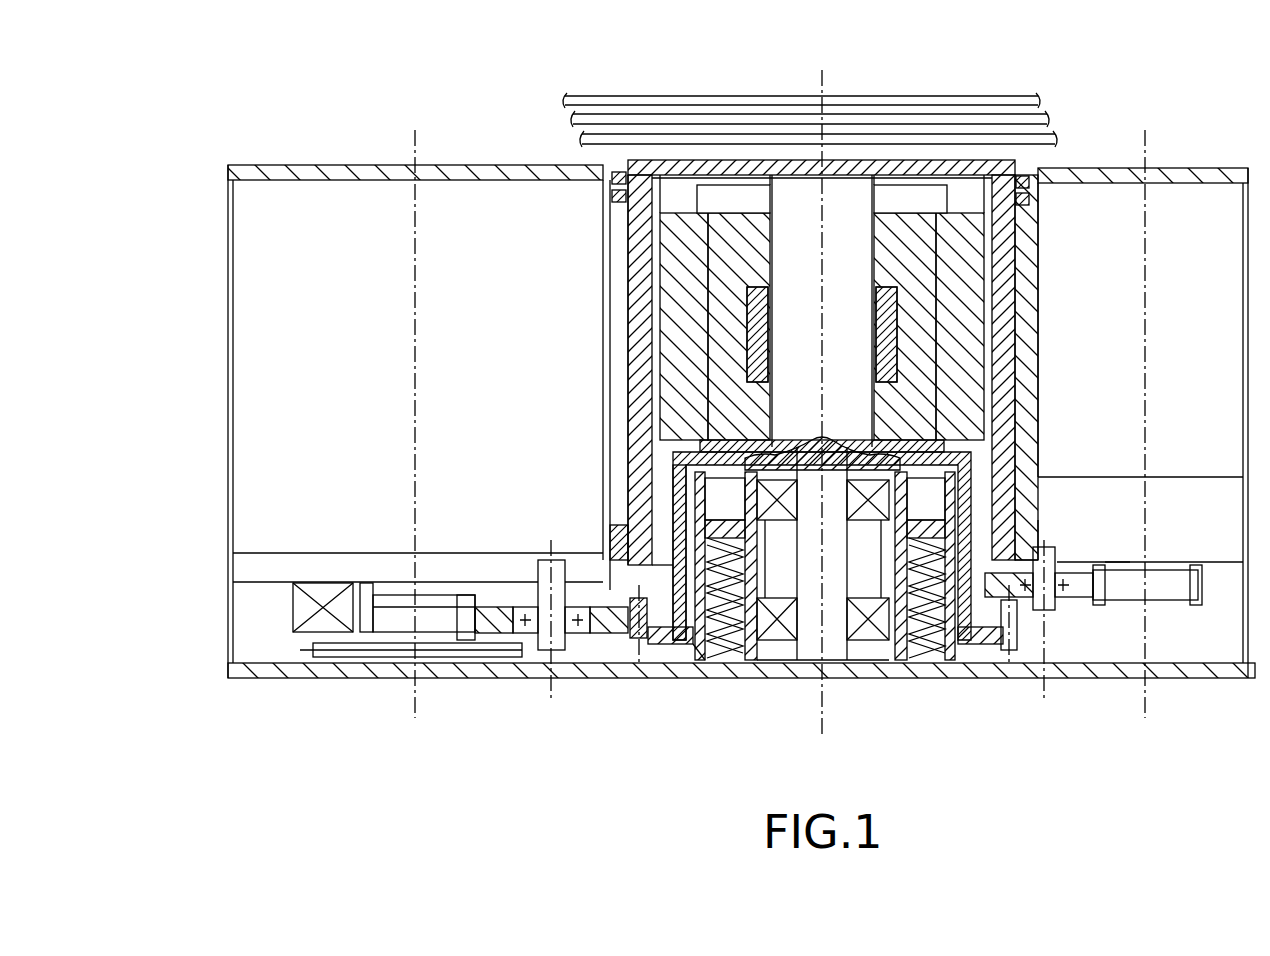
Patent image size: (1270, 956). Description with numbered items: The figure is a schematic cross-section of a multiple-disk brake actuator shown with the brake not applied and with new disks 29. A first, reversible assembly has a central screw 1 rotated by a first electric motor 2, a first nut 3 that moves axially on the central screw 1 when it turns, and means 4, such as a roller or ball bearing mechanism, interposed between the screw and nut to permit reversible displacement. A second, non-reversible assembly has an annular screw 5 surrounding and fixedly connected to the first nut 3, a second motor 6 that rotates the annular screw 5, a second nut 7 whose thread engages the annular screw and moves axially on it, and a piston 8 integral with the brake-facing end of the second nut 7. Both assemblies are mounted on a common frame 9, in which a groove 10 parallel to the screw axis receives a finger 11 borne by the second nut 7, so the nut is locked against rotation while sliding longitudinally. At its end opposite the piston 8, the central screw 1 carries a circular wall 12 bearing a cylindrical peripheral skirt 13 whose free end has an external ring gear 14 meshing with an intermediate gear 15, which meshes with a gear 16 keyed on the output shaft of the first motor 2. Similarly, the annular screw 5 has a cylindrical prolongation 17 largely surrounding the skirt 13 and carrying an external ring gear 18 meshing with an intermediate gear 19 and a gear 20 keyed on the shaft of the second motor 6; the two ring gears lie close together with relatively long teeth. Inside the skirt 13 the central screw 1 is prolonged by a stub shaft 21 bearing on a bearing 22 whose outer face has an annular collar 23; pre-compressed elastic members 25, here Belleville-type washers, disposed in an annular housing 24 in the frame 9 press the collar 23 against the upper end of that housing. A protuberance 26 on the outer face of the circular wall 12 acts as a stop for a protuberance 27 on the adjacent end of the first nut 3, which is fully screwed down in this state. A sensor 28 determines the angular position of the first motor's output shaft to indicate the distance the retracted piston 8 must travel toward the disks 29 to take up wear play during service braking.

The central screw 1 is at (808, 205).
The first electric motor 2 is at (262, 288).
The first nut 3 is at (745, 235).
The means 4 is at (868, 300).
The annular screw 5 is at (690, 238).
The second motor 6 is at (1203, 225).
The second nut 7 is at (1037, 247).
The piston 8 is at (938, 195).
The frame 9 is at (1030, 357).
The groove 10 is at (628, 383).
The finger 11 is at (625, 535).
The circular wall 12 is at (933, 443).
The cylindrical peripheral skirt 13 is at (1035, 528).
The external ring gear 14 is at (1017, 642).
The intermediate gear 15 is at (614, 632).
The gear 16 is at (402, 628).
The cylindrical prolongation 17 is at (975, 482).
The external ring gear 18 is at (967, 620).
The intermediate gear 19 is at (1077, 595).
The gear 20 is at (1170, 592).
The stub shaft 21 is at (850, 580).
The bearing 22 is at (787, 585).
The annular collar 23 is at (758, 605).
The annular housing 24 is at (700, 640).
The elastic members 25 is at (922, 597).
The protuberance 26 is at (675, 480).
The protuberance 27 is at (715, 448).
The sensor 28 is at (310, 625).
The disks 29 is at (613, 140).